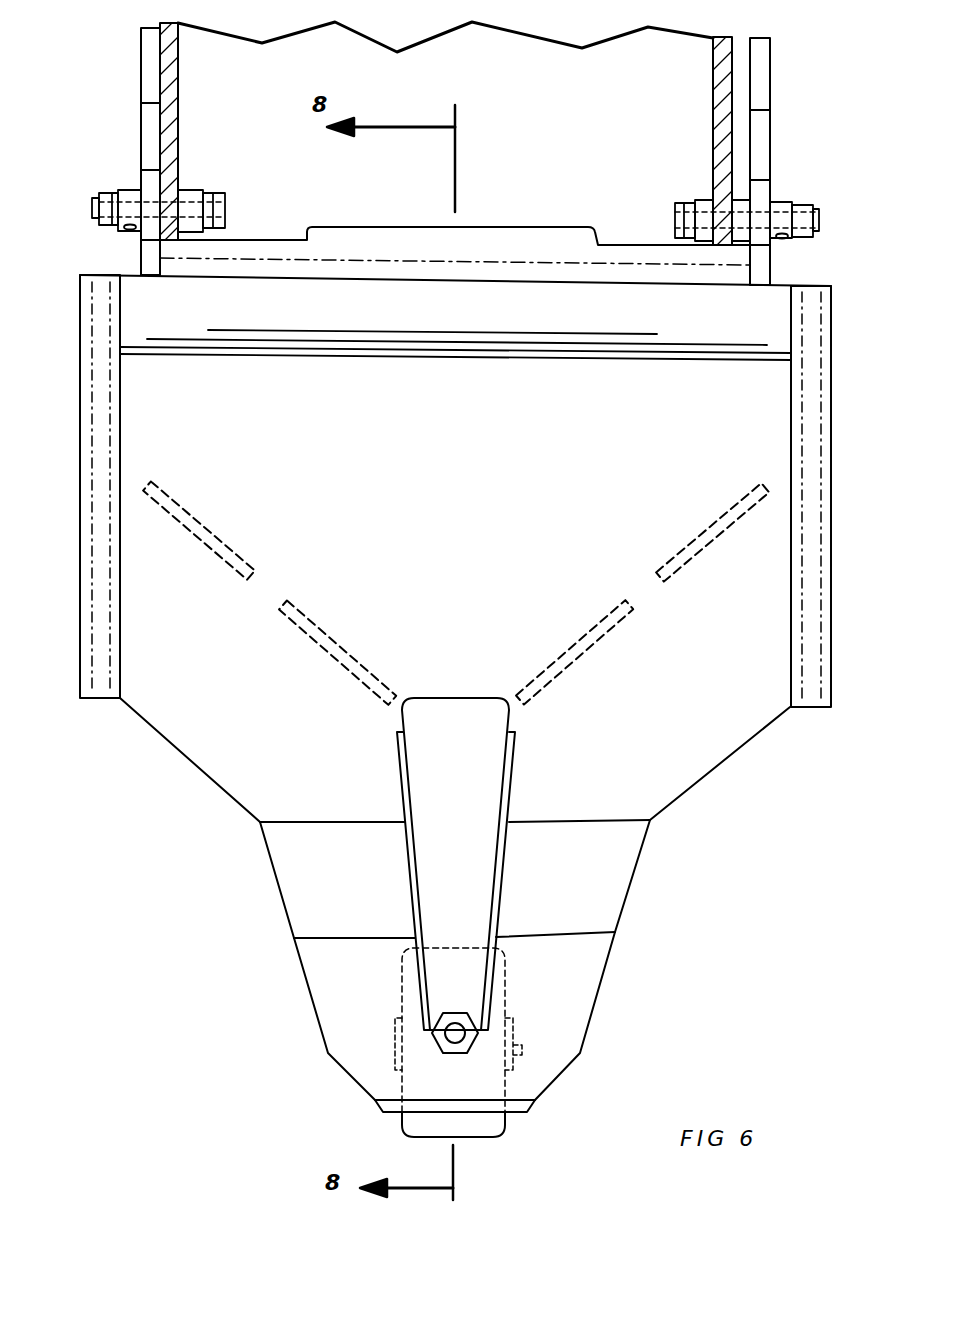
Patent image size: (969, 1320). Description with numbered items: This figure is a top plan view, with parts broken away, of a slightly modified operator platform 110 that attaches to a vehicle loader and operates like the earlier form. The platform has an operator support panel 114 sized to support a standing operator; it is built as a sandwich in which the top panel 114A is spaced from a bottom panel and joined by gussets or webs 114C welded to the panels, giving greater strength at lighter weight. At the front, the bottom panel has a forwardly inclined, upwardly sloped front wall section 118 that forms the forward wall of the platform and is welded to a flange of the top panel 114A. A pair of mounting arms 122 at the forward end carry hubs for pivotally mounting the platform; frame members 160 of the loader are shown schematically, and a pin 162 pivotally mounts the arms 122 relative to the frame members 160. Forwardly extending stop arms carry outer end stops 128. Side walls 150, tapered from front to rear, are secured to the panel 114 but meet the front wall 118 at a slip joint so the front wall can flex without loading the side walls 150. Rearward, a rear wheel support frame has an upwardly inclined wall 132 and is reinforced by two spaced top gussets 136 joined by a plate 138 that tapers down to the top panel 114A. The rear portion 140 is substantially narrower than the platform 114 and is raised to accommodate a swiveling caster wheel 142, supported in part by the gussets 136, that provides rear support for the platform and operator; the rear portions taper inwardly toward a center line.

The operator platform 110 is at (200, 808).
The operator support panel 114 is at (678, 780).
The top panel 114A is at (718, 733).
The gussets or webs 114C is at (318, 617).
The front wall section 118 is at (430, 318).
The mounting arms 122 is at (141, 258).
The outer end stops 128 is at (150, 75).
The upwardly inclined wall 132 is at (603, 867).
The top gussets 136 is at (403, 800).
The plate 138 is at (465, 715).
The rear portion 140 is at (556, 1020).
The caster wheel 142 is at (488, 1122).
The side walls 150 is at (118, 670).
The frame members 160 is at (170, 128).
The pin 162 is at (102, 192).